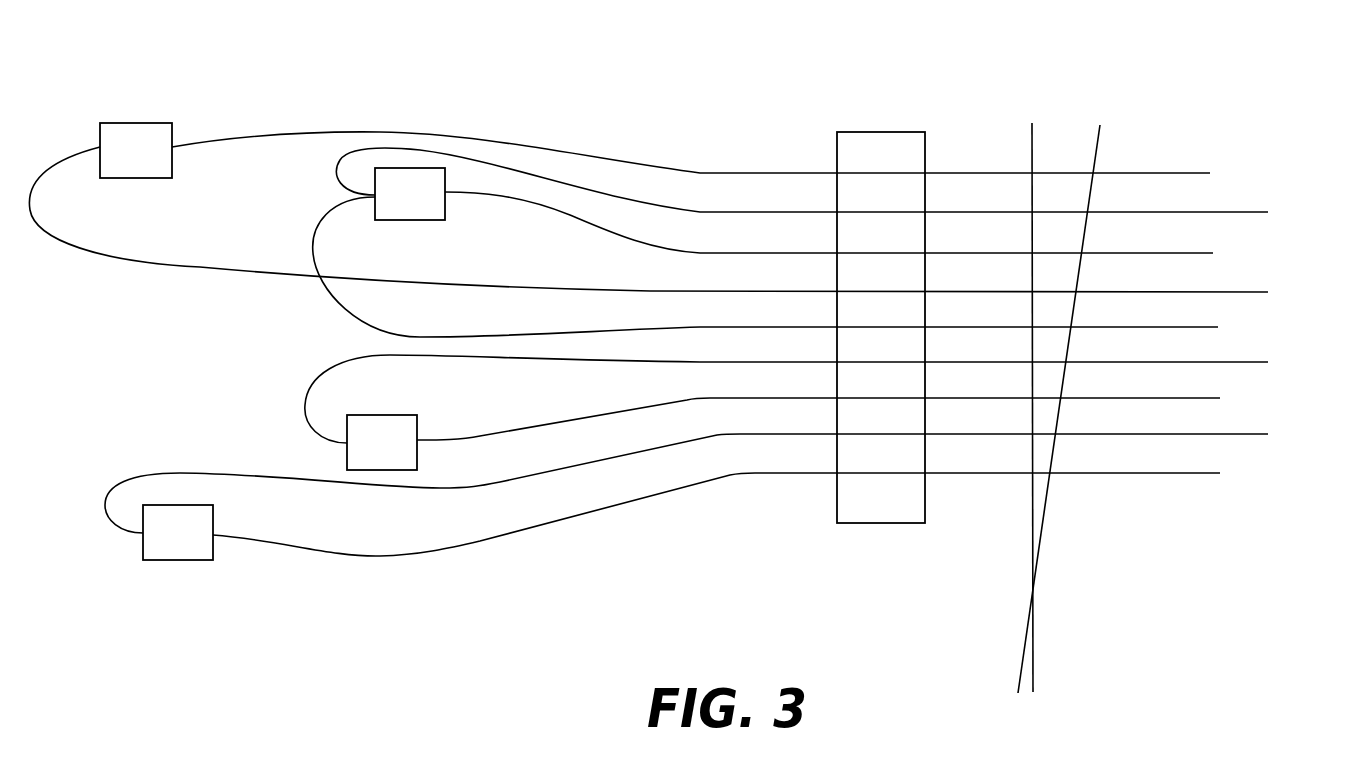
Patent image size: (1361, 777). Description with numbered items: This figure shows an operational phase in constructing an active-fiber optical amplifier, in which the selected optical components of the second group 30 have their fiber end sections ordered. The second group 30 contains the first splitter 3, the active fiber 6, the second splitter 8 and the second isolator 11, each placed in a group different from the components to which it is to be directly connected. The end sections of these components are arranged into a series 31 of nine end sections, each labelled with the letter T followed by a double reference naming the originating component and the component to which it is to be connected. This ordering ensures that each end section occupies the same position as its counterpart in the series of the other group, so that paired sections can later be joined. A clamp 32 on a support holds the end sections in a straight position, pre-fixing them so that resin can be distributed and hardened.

The second group 30 is at (294, 123).
The series of end sections 31 is at (969, 146).
The clamp 32 is at (859, 132).
The second isolator 11 is at (136, 150).
The second splitter 8 is at (410, 194).
The active fiber 6 is at (382, 442).
The first splitter 3 is at (178, 532).